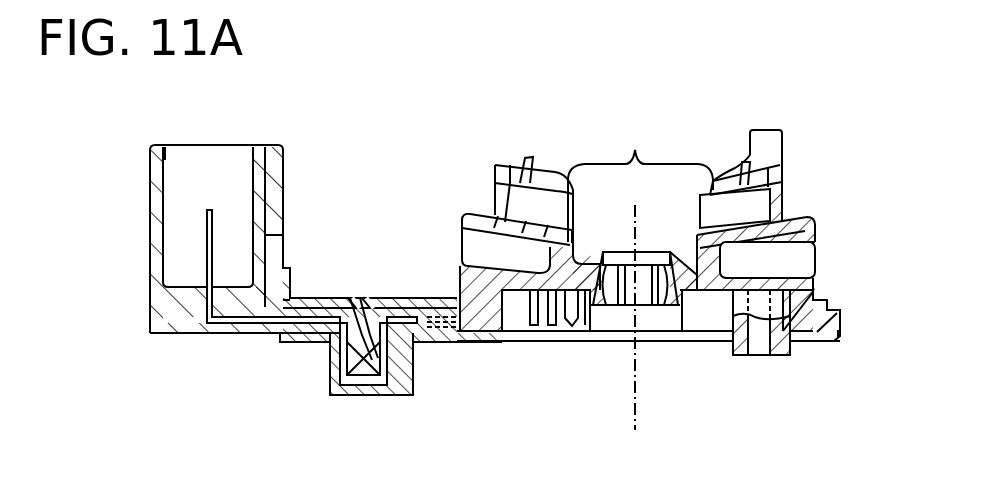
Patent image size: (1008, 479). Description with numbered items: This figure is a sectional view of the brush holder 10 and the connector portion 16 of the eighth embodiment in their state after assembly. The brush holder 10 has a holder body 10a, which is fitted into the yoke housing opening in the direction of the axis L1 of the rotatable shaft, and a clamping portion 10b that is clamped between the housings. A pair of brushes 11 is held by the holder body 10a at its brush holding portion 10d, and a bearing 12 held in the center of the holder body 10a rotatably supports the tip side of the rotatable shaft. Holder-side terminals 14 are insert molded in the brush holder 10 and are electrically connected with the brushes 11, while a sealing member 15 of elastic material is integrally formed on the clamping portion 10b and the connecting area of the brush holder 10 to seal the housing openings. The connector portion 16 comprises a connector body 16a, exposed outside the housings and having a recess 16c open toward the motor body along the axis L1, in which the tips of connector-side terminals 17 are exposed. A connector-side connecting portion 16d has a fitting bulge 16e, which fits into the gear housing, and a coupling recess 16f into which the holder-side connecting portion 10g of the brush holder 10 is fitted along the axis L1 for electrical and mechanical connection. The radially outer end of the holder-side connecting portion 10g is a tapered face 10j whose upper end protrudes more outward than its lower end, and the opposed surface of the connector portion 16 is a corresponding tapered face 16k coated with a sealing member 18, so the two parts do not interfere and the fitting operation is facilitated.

The brush holder 10 is at (784, 126).
The holder body 10a is at (812, 220).
The clamping portion 10b is at (828, 300).
The brush holding portion 10d is at (635, 150).
The holder-side connecting portion 10g is at (352, 388).
The tapered face 10j is at (358, 302).
The brushes 11 is at (522, 162).
The bearing 12 is at (617, 313).
The holder-side terminals 14 is at (388, 322).
The sealing member 15 is at (428, 298).
The connector portion 16 is at (287, 142).
The connector body 16a is at (150, 258).
The recess 16c is at (168, 152).
The connector-side connecting portion 16d is at (412, 377).
The fitting bulge 16e is at (390, 396).
The coupling recess 16f is at (398, 348).
The tapered face 16k is at (345, 338).
The connector-side terminals 17 is at (212, 210).
The sealing member 18 is at (316, 298).
The axis of the rotatable shaft L1 is at (645, 410).